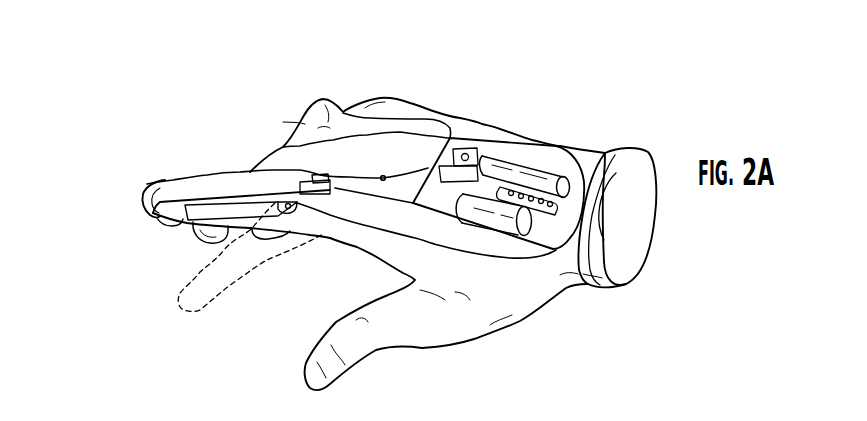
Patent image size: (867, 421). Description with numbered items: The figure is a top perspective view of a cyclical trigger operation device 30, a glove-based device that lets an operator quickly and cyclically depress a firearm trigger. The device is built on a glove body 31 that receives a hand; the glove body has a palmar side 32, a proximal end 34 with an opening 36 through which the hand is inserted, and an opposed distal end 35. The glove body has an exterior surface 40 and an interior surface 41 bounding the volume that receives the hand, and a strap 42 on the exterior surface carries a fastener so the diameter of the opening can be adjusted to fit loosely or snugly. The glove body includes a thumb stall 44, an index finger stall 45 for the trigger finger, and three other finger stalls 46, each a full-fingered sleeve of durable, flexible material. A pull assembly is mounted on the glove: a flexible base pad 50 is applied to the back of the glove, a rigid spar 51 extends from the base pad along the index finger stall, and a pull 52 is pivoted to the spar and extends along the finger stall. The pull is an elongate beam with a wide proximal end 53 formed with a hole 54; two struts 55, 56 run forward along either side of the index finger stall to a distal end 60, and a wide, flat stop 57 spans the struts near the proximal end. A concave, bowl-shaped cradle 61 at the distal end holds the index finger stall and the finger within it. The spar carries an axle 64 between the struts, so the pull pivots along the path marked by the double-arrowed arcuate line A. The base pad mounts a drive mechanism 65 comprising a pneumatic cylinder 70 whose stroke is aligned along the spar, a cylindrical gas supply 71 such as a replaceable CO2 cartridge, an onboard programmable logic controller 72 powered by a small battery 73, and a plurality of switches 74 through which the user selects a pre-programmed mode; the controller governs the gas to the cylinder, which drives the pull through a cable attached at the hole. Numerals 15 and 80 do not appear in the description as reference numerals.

The cyclical trigger operation device 30 is at (615, 100).
The glove body 31 is at (533, 136).
The palmar side 32 is at (474, 140).
The proximal end 34 is at (628, 152).
The distal end 35 is at (147, 183).
The opening 36 is at (646, 232).
The exterior surface 40 is at (532, 302).
The interior surface 41 is at (632, 273).
The strap 42 is at (590, 284).
The thumb stall 44 is at (404, 342).
The index finger stall 45 is at (241, 180).
The finger stalls 46 is at (290, 150).
The base pad 50 is at (457, 137).
The spar 51 is at (385, 204).
The strap attachment 15 is at (435, 212).
The pull 52 is at (208, 196).
The proximal end 53 is at (350, 176).
The hole 54 is at (387, 177).
The strut 55 is at (327, 173).
The strut 56 is at (310, 200).
The stop 57 is at (337, 183).
The distal end 60 is at (158, 180).
The cradle 61 is at (160, 218).
The axle 64 is at (298, 172).
The drive mechanism 65 is at (583, 179).
The pneumatic cylinder 70 is at (497, 235).
The gas supply 71 is at (540, 156).
The programmable logic controller 72 is at (458, 185).
The battery 73 is at (476, 150).
The switches 74 is at (528, 223).
The finger tip portion 80 is at (181, 224).
The arcuate line A is at (153, 218).